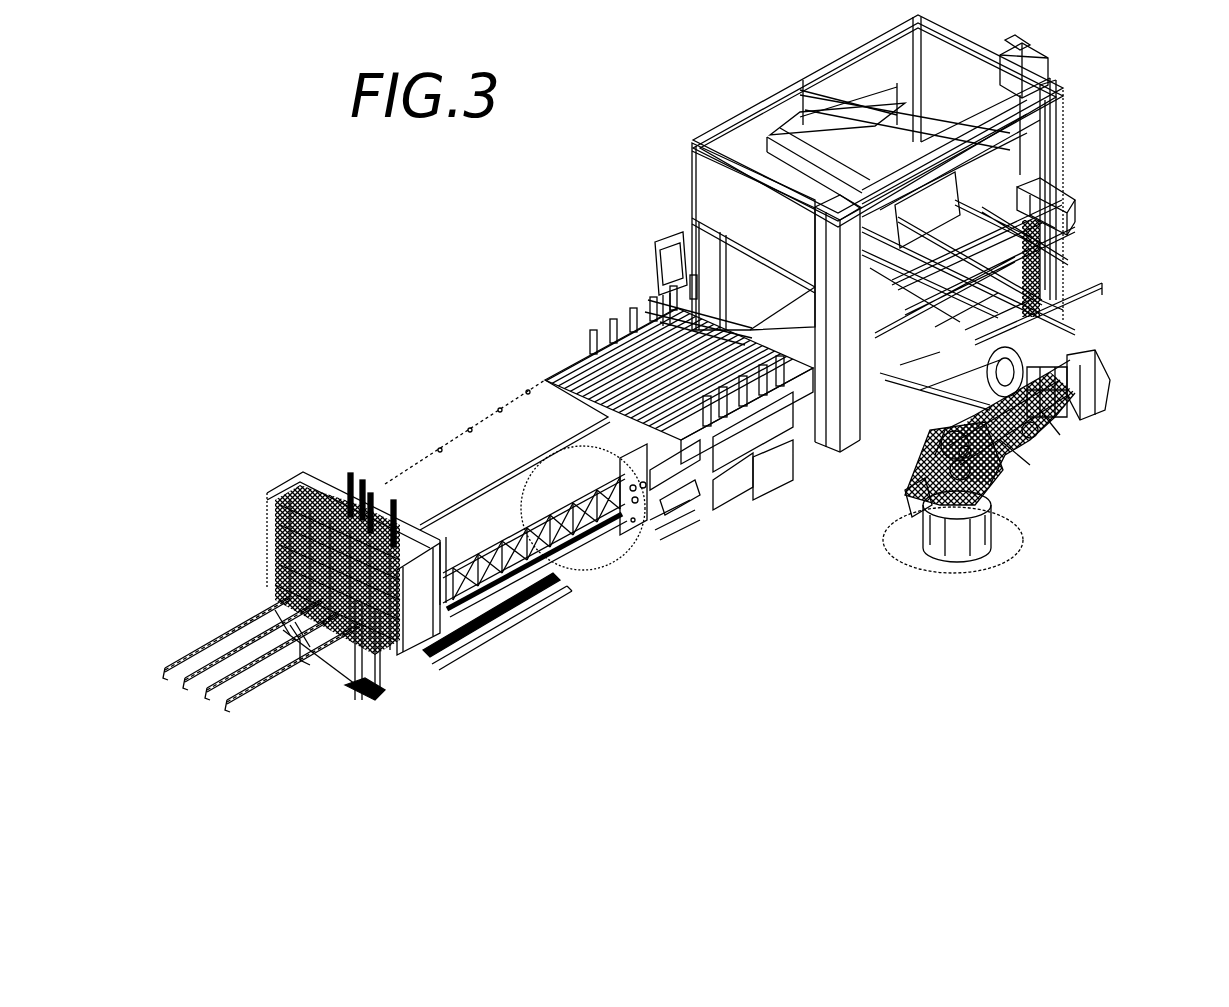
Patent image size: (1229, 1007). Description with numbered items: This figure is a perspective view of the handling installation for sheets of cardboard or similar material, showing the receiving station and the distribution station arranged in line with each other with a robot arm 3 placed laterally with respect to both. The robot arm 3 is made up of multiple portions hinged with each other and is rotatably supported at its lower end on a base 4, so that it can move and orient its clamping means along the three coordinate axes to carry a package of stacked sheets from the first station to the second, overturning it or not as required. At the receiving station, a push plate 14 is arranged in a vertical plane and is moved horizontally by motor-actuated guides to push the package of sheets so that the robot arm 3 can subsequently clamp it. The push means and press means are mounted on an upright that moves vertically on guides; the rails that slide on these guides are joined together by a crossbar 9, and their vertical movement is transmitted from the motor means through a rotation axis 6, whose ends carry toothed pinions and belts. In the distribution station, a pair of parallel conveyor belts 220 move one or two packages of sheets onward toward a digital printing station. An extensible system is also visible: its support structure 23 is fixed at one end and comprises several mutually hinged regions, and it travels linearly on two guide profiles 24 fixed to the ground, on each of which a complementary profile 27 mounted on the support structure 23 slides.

The robot arm 3 is at (1052, 447).
The base 4 is at (952, 568).
The rotation axis 6 is at (1057, 102).
The crossbar 9 is at (1047, 158).
The push plate 14 is at (1020, 183).
The support structure 23 is at (547, 565).
The guide profiles 24 is at (507, 620).
The complementary profile 27 is at (363, 690).
The conveyor belts 220 is at (550, 487).